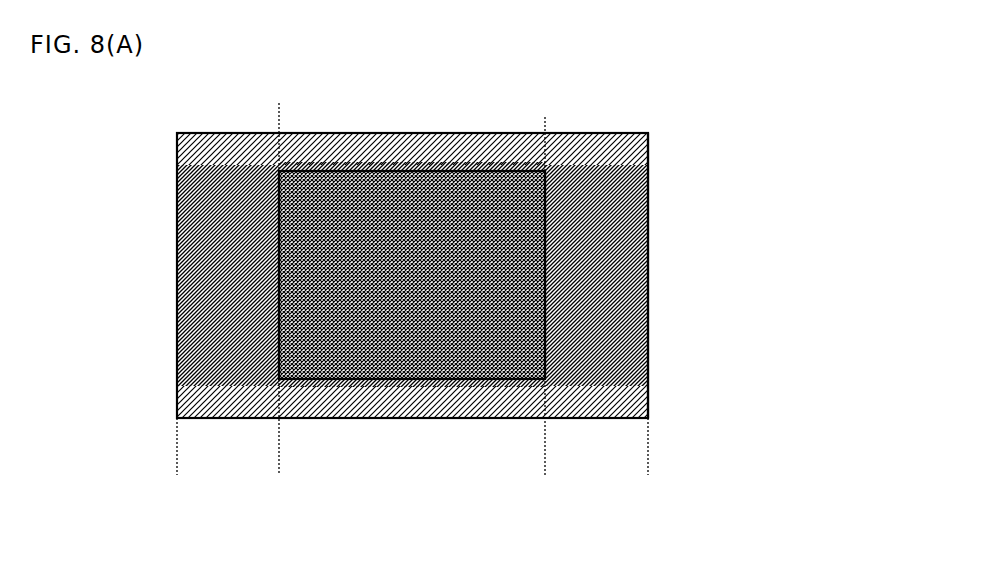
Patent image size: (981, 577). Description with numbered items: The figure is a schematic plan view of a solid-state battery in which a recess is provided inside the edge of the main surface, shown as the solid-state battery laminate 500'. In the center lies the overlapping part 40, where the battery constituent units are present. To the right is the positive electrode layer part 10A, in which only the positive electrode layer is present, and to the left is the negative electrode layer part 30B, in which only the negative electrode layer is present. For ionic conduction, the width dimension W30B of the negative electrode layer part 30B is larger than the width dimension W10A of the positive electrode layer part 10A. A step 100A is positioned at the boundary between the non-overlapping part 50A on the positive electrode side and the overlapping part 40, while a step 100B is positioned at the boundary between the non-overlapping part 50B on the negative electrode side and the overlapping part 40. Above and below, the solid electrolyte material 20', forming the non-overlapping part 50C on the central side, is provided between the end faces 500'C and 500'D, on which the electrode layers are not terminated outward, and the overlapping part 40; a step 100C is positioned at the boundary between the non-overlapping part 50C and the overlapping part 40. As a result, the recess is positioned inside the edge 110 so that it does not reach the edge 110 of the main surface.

The solid-state battery laminate 500' is at (412, 209).
The end face on which electrode layer is not terminated 500'C is at (412, 91).
The end face on which electrode layer is not terminated 500'D is at (412, 470).
The solid electrolyte material 20' is at (412, 275).
The negative electrode layer part 30B is at (257, 290).
The positive electrode layer part 10A is at (625, 290).
The overlapping part 40 is at (430, 289).
The non-overlapping part on positive electrode side 50A is at (648, 457).
The non-overlapping part on negative electrode side 50B is at (279, 457).
The non-overlapping part on central side 50C is at (427, 133).
The step between non-overlapping part on positive electrode side and overlapping par 100A is at (556, 243).
The step between non-overlapping part on negative electrode side and overlapping par 100B is at (266, 322).
The step between non-overlapping part on central side and overlapping part 100C is at (491, 162).
The edge 110 is at (650, 338).
The width dimension of negative electrode layer part W30B is at (279, 386).
The width dimension of positive electrode layer part W10A is at (545, 172).